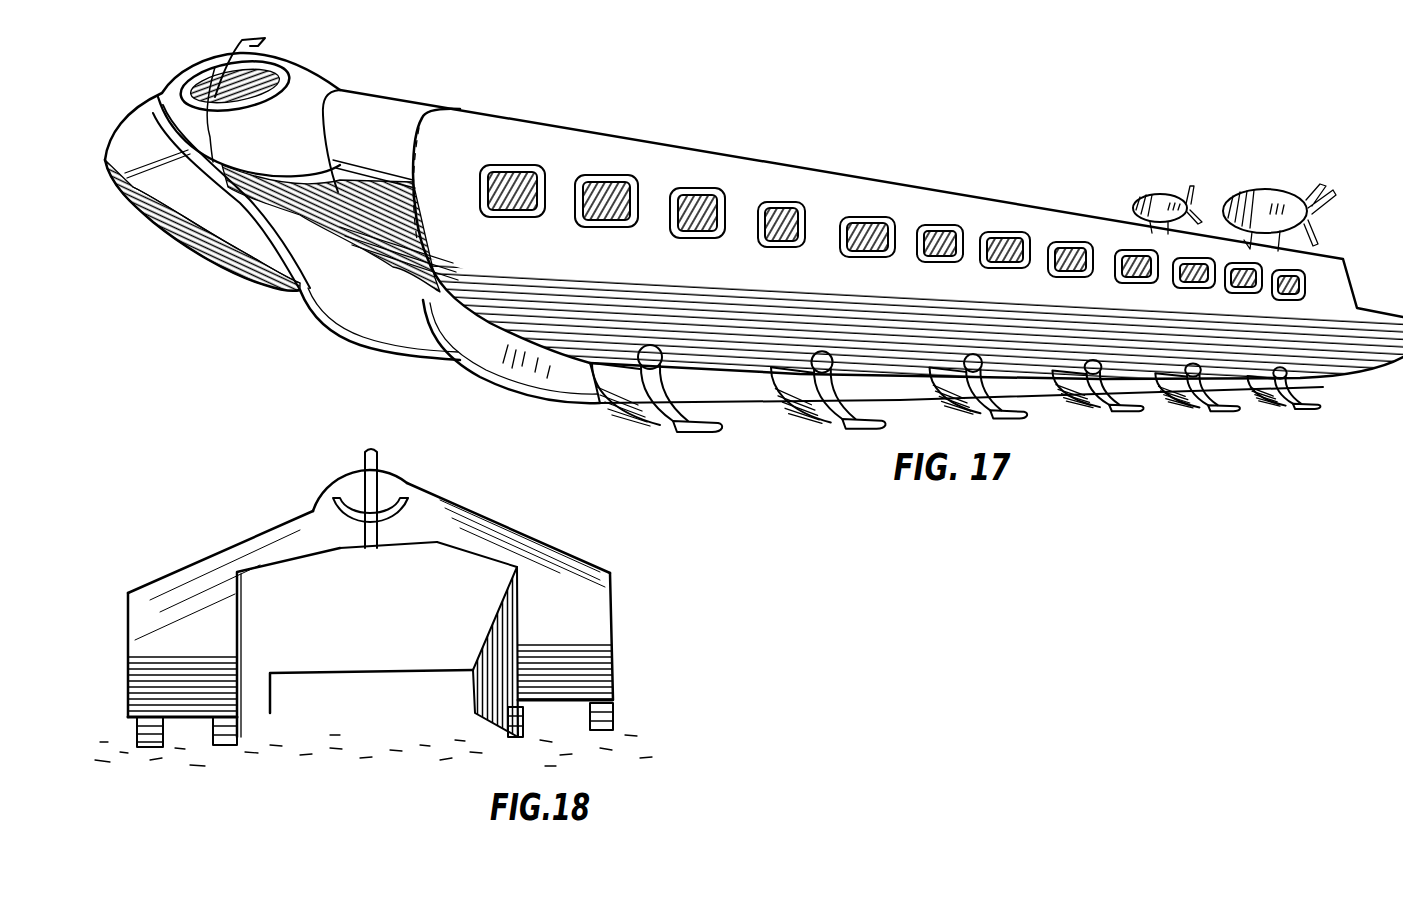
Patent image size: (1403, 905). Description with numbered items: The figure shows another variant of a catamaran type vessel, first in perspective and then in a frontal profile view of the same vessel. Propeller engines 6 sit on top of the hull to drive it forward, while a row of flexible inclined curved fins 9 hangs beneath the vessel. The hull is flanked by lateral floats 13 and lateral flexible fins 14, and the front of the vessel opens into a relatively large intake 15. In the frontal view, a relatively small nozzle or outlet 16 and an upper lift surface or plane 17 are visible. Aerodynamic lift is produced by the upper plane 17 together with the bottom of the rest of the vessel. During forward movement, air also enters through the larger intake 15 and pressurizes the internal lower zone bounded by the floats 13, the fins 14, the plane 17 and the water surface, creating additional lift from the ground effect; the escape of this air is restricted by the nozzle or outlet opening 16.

In FIG. 17, the propeller engines 6 is at (1190, 208).
In FIG. 17, the flexible inclined curved fins 9 is at (688, 428).
In FIG. 18, the flexible inclined curved fins 9 is at (135, 728).
In FIG. 17, the lateral floats 13 is at (212, 258).
In FIG. 18, the lateral floats 13 is at (608, 658).
In FIG. 17, the lateral flexible fins 14 is at (320, 308).
In FIG. 18, the lateral flexible fins 14 is at (512, 720).
In FIG. 17, the relatively large intake 15 is at (290, 285).
In FIG. 18, the relatively large intake 15 is at (246, 632).
In FIG. 18, the relatively small nozzle or outlet 16 is at (292, 682).
In FIG. 18, the lift surface or plane 17 is at (478, 525).